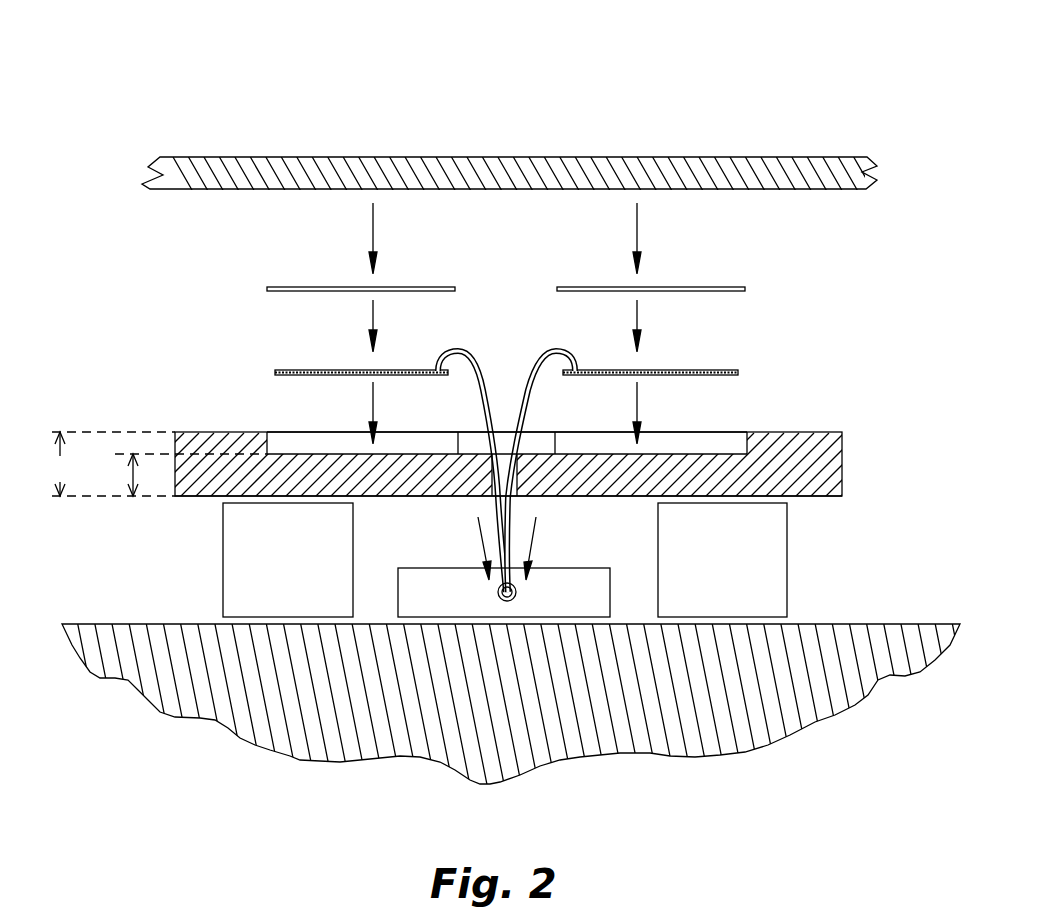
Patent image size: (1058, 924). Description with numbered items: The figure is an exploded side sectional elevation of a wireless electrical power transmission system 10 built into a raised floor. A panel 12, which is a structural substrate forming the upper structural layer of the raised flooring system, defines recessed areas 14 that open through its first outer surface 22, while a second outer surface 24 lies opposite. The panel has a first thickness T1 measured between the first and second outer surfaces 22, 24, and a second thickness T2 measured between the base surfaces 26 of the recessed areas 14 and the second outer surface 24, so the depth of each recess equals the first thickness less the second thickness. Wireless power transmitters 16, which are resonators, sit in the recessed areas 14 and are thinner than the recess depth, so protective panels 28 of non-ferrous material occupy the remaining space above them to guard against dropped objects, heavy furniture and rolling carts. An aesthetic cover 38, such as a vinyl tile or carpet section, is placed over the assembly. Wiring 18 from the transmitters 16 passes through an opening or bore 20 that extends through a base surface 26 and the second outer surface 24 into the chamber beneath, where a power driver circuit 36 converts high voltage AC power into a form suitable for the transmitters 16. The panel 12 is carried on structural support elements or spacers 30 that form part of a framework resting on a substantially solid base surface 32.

The wireless electrical power transmission system 10 is at (903, 85).
The panel 12 is at (474, 462).
The recessed areas 14 is at (406, 433).
The wireless power transmitters 16 is at (301, 370).
The wiring 18 is at (473, 354).
The opening or bore 20 is at (516, 502).
The first outer surface 22 is at (203, 431).
The second outer surface 24 is at (201, 497).
The base surfaces 26 is at (313, 453).
The protective panels 28 is at (283, 287).
The structural support elements or spacers 30 is at (292, 567).
The base surface 32 is at (120, 624).
The power driver circuit 36 is at (412, 578).
The aesthetic cover 38 is at (186, 160).
The first thickness T1 is at (111, 464).
The second thickness T2 is at (181, 475).